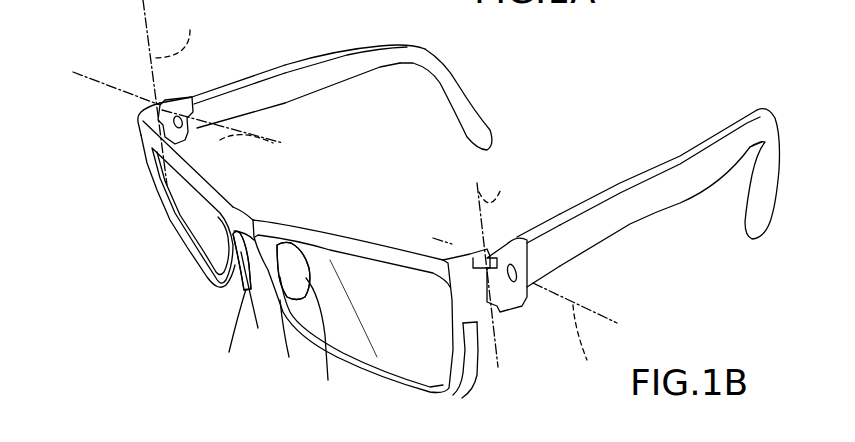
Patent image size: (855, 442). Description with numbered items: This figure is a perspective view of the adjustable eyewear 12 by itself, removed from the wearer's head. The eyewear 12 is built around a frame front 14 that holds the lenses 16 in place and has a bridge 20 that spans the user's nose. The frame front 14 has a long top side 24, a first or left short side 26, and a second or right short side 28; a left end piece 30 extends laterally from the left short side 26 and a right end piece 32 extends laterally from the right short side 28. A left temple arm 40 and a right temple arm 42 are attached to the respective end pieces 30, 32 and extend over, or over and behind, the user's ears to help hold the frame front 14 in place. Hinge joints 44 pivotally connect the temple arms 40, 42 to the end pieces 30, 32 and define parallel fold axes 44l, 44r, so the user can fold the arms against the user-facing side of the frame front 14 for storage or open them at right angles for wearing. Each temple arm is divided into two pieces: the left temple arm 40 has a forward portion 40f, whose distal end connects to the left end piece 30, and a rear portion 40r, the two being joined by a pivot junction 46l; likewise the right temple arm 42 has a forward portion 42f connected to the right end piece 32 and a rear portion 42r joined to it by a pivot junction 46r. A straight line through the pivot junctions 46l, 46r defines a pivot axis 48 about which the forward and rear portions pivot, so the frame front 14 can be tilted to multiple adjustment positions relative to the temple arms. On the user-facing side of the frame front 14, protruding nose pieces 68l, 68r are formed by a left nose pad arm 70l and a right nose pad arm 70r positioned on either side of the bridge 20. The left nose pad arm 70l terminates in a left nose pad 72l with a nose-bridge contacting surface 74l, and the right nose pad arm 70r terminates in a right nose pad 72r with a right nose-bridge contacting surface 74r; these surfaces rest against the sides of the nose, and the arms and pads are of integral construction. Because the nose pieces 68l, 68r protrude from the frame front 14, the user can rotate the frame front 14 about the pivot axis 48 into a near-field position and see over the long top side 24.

The adjustable eyewear 12 is at (377, 233).
The frame front 14 is at (187, 152).
The lenses 16 is at (187, 207).
The bridge 20 is at (245, 213).
The long top side 24 is at (337, 232).
The left short side 26 is at (473, 367).
The right short side 28 is at (148, 181).
The left end piece 30 is at (473, 267).
The right end piece 32 is at (136, 116).
The left temple arm 40 is at (625, 184).
The rear portion of left temple arm 40r is at (719, 145).
The forward portion of left temple arm 40f is at (507, 246).
The right temple arm 42 is at (291, 63).
The rear portion of right temple arm 42r is at (388, 57).
The forward portion of right temple arm 42f is at (193, 100).
The hinge joints 44 is at (163, 106).
The right fold axis 44r is at (183, 34).
The left fold axis 44l is at (498, 181).
The right pivot junction 46r is at (185, 120).
The left pivot junction 46l is at (516, 272).
The pivot axis 48 is at (345, 188).
The right nose piece 68r is at (232, 253).
The left nose piece 68l is at (306, 272).
The right nose pad arm 70r is at (245, 217).
The left nose pad arm 70l is at (322, 259).
The right nose pad 72r is at (225, 334).
The left nose pad 72l is at (341, 330).
The right nose-bridge contacting surface 74r is at (256, 305).
The left nose-bridge contacting surface 74l is at (290, 349).